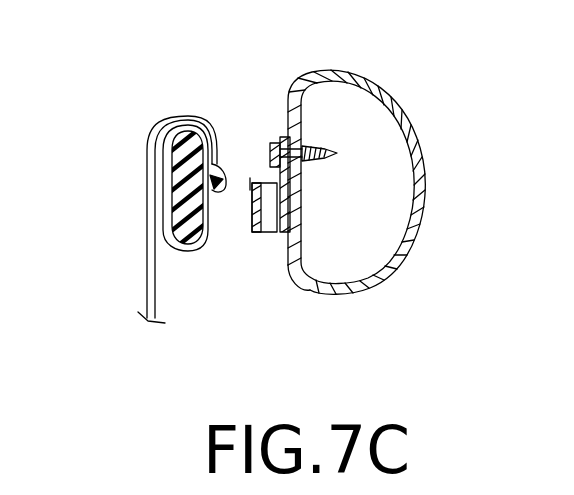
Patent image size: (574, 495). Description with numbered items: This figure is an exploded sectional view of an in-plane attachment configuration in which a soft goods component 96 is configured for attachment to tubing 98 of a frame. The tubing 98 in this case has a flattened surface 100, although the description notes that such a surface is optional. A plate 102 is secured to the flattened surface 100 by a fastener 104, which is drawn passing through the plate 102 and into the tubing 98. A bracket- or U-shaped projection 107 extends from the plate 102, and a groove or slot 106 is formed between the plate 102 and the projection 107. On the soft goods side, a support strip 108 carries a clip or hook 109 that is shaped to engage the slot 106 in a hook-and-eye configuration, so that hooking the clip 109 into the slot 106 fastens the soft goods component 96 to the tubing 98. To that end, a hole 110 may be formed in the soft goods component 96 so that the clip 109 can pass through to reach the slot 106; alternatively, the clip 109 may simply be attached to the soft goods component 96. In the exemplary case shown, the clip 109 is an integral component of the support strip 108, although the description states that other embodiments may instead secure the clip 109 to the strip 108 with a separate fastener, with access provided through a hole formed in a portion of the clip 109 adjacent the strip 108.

The soft goods component 96 is at (126, 173).
The tubing 98 is at (402, 105).
The flattened surface 100 is at (286, 268).
The plate 102 is at (272, 140).
The fastener 104 is at (318, 143).
The slot 106 is at (273, 232).
The U-shaped projection 107 is at (253, 232).
The support strip 108 is at (182, 222).
The clip 109 is at (229, 165).
The hole 110 is at (210, 150).